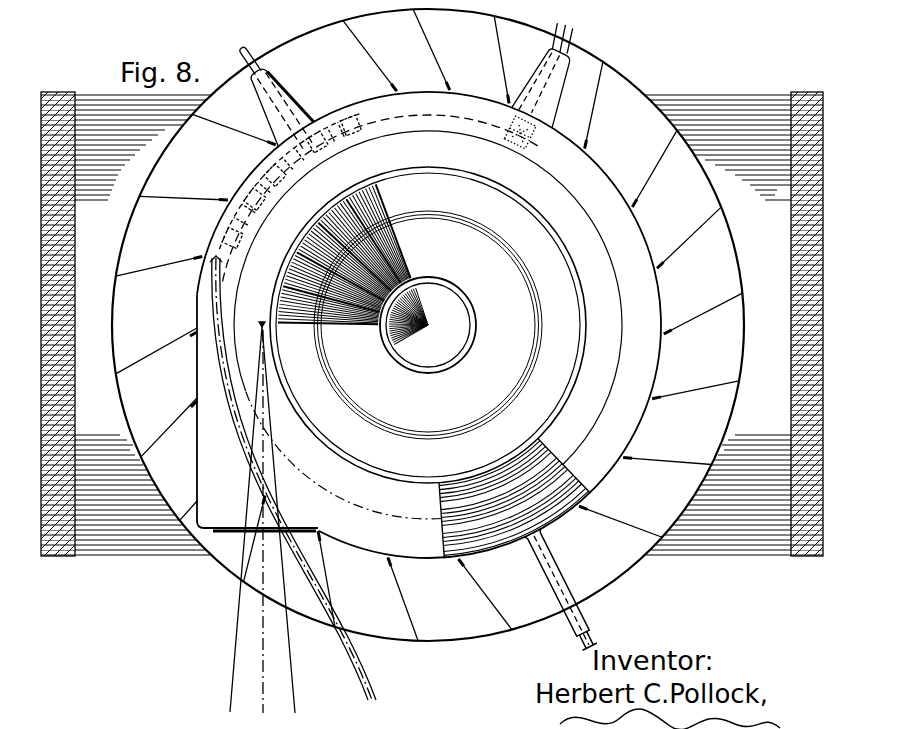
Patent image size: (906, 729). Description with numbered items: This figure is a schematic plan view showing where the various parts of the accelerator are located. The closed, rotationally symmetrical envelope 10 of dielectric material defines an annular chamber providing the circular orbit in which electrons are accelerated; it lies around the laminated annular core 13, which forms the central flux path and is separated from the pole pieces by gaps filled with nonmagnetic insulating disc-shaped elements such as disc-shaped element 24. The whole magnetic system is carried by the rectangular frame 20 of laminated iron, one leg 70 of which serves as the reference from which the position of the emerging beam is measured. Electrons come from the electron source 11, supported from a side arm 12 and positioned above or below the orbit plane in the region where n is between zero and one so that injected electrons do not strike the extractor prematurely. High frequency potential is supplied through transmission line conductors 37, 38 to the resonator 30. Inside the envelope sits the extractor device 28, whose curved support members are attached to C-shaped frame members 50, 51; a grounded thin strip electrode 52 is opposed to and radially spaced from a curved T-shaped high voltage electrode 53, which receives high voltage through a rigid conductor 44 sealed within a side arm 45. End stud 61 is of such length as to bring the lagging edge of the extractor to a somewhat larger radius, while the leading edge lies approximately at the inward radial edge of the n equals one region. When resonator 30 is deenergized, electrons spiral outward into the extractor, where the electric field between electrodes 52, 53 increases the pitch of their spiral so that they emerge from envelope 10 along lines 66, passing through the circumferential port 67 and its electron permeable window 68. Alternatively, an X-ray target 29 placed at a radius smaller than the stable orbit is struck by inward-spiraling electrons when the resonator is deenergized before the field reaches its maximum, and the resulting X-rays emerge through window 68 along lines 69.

The envelope 10 is at (197, 295).
The electron source 11 is at (533, 139).
The side arm 12 is at (553, 105).
The laminated annular core 13 is at (447, 367).
The rectangular frame 20 is at (707, 95).
The disc-shaped element 24 is at (477, 336).
The extractor device 28 is at (379, 197).
The X-ray target 29 is at (262, 322).
The resonator 30 is at (477, 493).
The transmission line conductor 37 is at (550, 596).
The transmission line conductor 38 is at (594, 649).
The conductor 44 is at (252, 59).
The side arm 45 is at (258, 113).
The C-shaped frame member 50 is at (351, 112).
The C-shaped frame member 51 is at (270, 168).
The electrode 52 is at (240, 254).
The high voltage electrode 53 is at (334, 113).
The end stud 61 is at (224, 262).
The lines 66 is at (363, 686).
The circumferential port 67 is at (197, 481).
The electron permeable window 68 is at (207, 533).
The lines 69 is at (233, 691).
The leg 70 is at (792, 317).